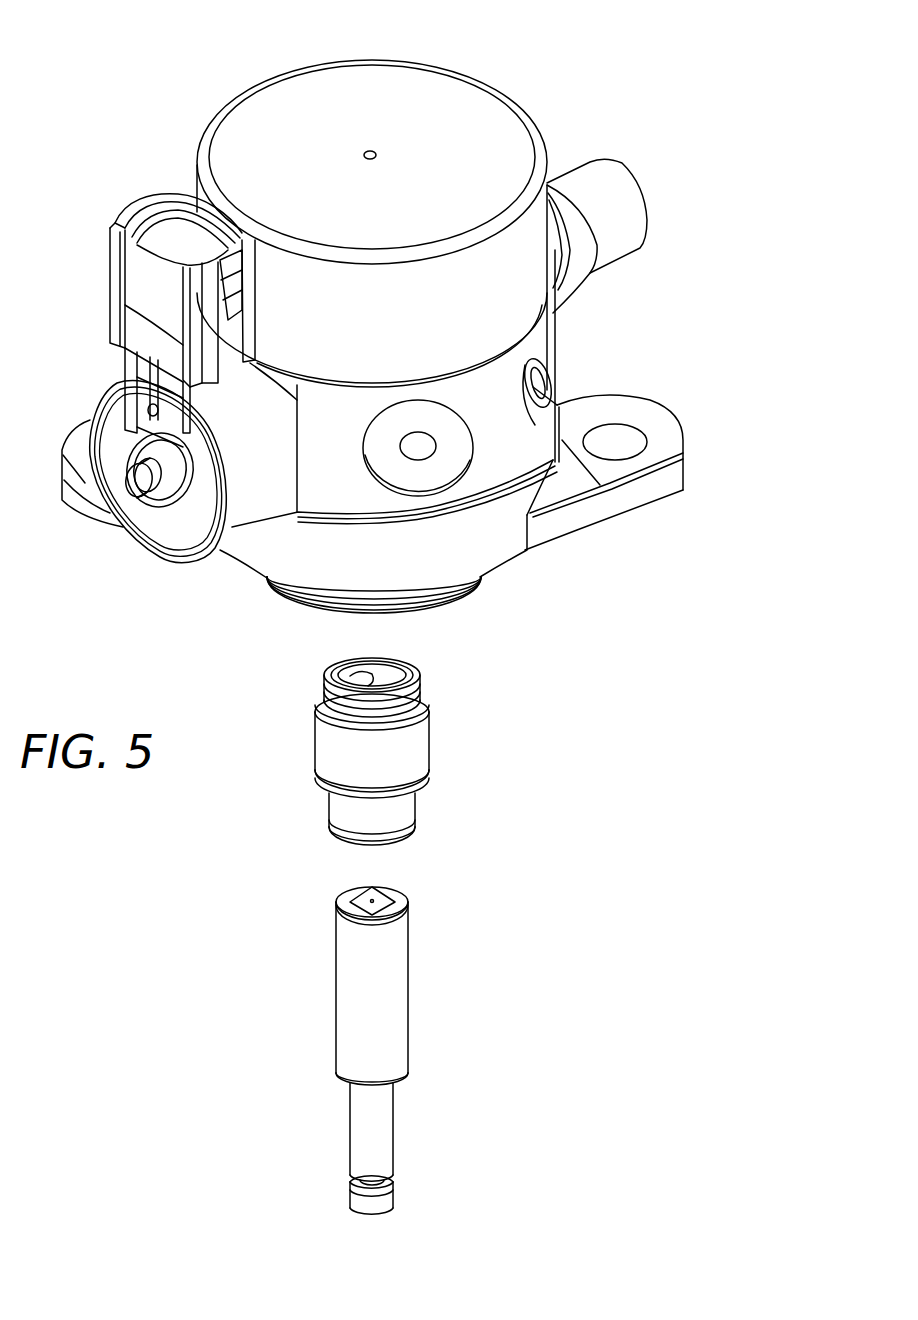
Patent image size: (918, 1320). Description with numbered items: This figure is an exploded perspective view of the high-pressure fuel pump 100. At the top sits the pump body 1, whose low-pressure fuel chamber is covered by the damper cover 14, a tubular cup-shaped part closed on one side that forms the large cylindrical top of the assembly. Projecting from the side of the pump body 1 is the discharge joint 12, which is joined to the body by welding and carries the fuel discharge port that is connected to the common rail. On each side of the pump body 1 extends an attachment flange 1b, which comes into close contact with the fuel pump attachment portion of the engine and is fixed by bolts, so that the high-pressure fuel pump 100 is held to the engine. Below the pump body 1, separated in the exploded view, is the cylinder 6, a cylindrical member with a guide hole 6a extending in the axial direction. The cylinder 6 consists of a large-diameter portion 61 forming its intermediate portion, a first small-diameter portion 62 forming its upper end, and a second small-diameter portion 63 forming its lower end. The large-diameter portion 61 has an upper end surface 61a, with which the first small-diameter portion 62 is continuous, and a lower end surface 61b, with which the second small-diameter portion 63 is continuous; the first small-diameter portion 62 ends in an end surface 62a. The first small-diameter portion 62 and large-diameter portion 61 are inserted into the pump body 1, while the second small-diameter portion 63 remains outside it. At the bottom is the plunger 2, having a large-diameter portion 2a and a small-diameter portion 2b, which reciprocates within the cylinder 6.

The high-pressure fuel pump 100 is at (112, 68).
The pump body 1 is at (517, 463).
The attachment flange 1b is at (78, 445).
The discharge joint 12 is at (603, 176).
The damper cover 14 is at (533, 123).
The cylinder 6 is at (537, 705).
The guide hole 6a is at (365, 685).
The large-diameter portion 61 is at (422, 742).
The end surface 61a is at (315, 696).
The end surface 61b is at (322, 786).
The first small-diameter portion 62 is at (433, 693).
The end surface 62a is at (415, 672).
The second small-diameter portion 63 is at (405, 803).
The plunger 2 is at (540, 1040).
The large-diameter portion 2a is at (398, 1013).
The small-diameter portion 2b is at (384, 1112).